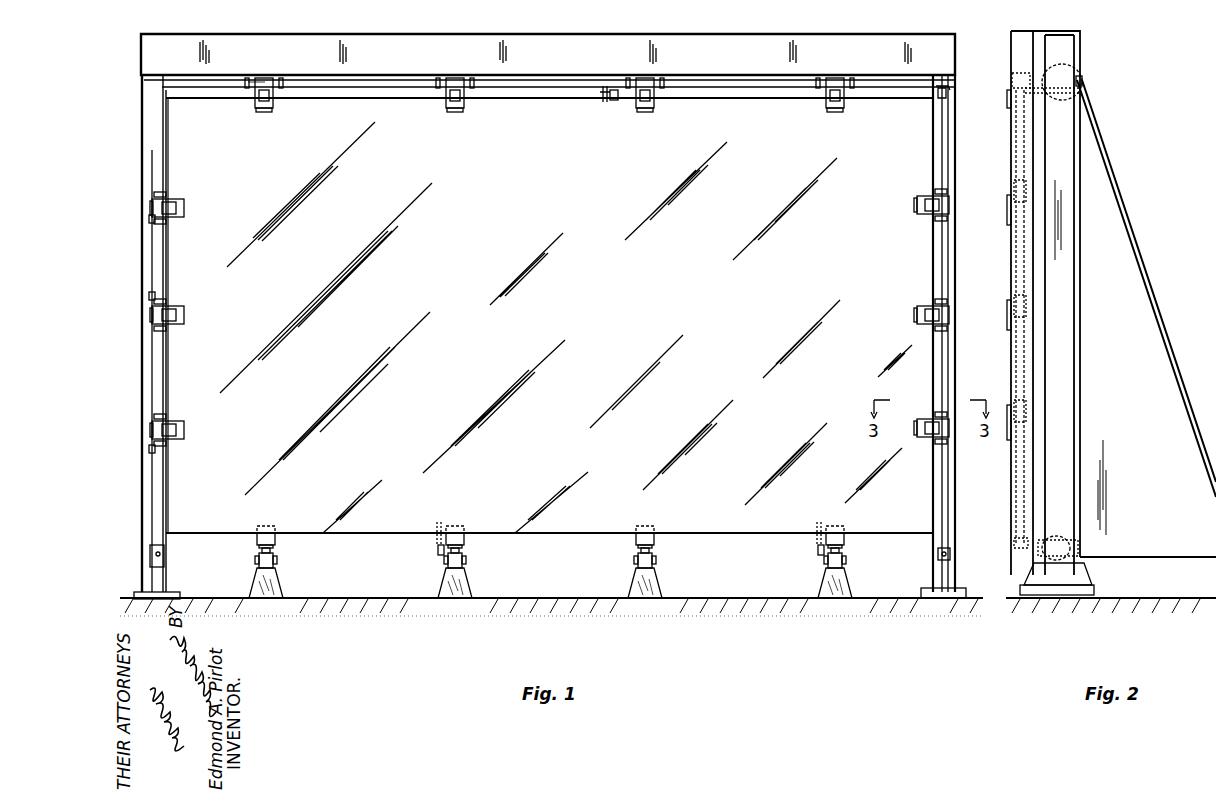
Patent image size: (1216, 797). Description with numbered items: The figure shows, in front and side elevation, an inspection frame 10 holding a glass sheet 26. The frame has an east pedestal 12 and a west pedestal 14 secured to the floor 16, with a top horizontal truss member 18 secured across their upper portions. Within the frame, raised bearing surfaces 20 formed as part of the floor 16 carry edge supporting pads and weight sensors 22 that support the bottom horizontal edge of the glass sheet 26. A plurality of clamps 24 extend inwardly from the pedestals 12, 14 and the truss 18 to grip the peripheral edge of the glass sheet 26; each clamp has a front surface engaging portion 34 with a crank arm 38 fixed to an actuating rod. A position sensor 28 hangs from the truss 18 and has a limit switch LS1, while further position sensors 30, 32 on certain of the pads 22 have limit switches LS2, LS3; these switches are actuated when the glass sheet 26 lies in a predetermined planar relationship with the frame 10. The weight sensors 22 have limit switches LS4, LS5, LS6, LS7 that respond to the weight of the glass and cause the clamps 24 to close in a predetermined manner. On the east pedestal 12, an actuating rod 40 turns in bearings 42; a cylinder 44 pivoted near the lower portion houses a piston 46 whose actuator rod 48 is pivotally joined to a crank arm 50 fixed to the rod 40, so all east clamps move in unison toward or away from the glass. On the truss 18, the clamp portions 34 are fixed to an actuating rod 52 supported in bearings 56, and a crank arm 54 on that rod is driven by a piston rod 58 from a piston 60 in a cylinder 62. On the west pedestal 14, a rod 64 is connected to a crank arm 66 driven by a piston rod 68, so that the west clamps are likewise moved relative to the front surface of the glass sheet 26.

In FIG. 1, the inspection frame 10 is at (956, 50).
In FIG. 1, the east pedestal 12 is at (950, 178).
In FIG. 2, the east pedestal 12 is at (1058, 303).
In FIG. 1, the west pedestal 14 is at (142, 180).
In FIG. 1, the floor 16 is at (568, 598).
In FIG. 2, the floor 16 is at (1172, 595).
In FIG. 1, the top horizontal truss member 18 is at (536, 30).
In FIG. 1, the raised bearing surfaces 20 is at (250, 596).
In FIG. 1, the edge supporting pads and weight sensors 22 is at (280, 547).
In FIG. 1, the clamps 24 is at (454, 111).
In FIG. 1, the glass sheet 26 is at (618, 206).
In FIG. 1, the position sensor 28 is at (603, 92).
In FIG. 1, the position sensor 30 is at (437, 540).
In FIG. 1, the position sensor 32 is at (817, 540).
In FIG. 1, the front surface engaging portion 34 is at (840, 112).
In FIG. 1, the crank arm 38 is at (826, 103).
In FIG. 1, the actuating rod 40 is at (946, 250).
In FIG. 1, the bearings 42 is at (950, 292).
In FIG. 2, the bearings 42 is at (1018, 309).
In FIG. 2, the cylinder 44 is at (1065, 538).
In FIG. 2, the piston 46 is at (1020, 537).
In FIG. 2, the actuator rod 48 is at (1030, 568).
In FIG. 1, the crank arm 50 is at (938, 555).
In FIG. 1, the actuating rod 52 is at (763, 85).
In FIG. 1, the crank arm 54 is at (940, 102).
In FIG. 2, the crank arm 54 is at (1013, 92).
In FIG. 1, the bearings 56 is at (250, 82).
In FIG. 2, the piston rod 58 is at (1075, 66).
In FIG. 2, the piston 60 is at (1080, 82).
In FIG. 2, the cylinder 62 is at (1078, 97).
In FIG. 1, the rod 64 is at (150, 240).
In FIG. 1, the crank arm 66 is at (166, 558).
In FIG. 1, the piston rod 68 is at (162, 553).
In FIG. 1, the limit switch LS1 is at (614, 102).
In FIG. 1, the limit switch LS2 is at (440, 555).
In FIG. 1, the limit switch LS3 is at (828, 555).
In FIG. 1, the limit switch LS4 is at (652, 560).
In FIG. 1, the limit switch LS5 is at (842, 560).
In FIG. 1, the limit switch LS6 is at (282, 560).
In FIG. 1, the limit switch LS7 is at (466, 560).